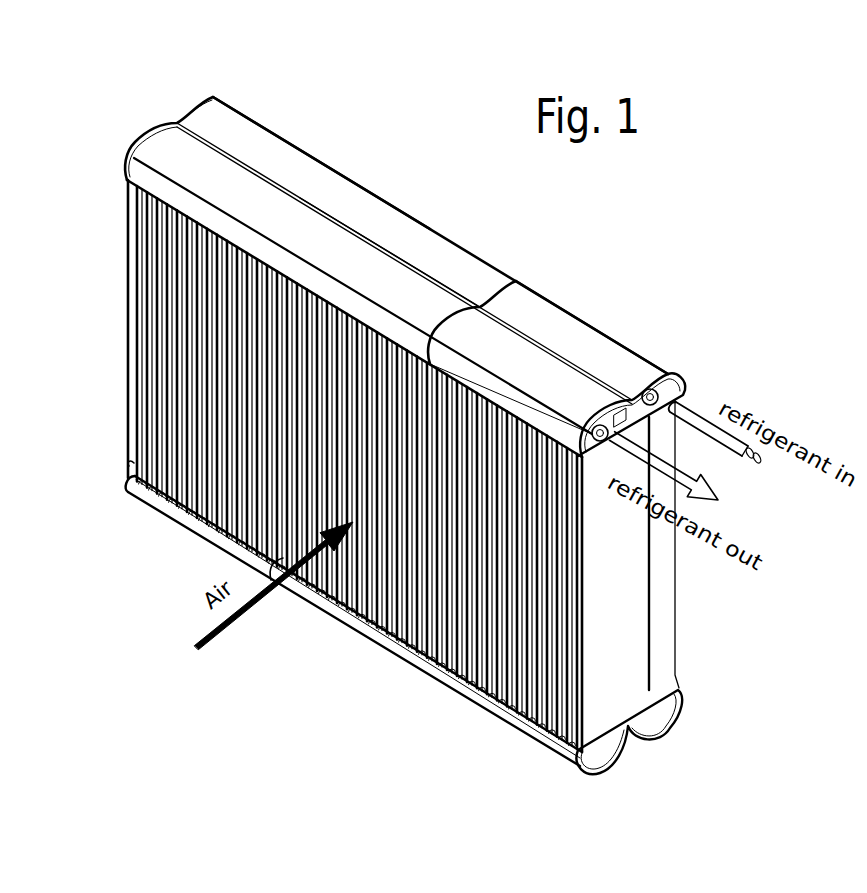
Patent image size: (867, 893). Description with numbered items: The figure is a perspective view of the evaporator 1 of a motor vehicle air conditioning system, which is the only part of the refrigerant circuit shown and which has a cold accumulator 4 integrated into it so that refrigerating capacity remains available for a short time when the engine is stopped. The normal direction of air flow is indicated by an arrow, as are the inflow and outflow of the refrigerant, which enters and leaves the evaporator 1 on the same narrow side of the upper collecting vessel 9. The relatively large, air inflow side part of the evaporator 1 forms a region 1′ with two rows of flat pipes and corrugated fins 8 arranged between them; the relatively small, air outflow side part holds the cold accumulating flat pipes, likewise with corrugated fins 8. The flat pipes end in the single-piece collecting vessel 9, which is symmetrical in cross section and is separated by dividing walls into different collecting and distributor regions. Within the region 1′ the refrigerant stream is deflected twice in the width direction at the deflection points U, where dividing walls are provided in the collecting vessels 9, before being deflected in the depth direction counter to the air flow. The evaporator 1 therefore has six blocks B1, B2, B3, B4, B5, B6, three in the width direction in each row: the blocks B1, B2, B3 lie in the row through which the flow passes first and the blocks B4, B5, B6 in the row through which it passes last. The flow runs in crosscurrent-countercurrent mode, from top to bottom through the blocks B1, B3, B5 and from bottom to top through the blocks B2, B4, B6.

The evaporator 1 is at (147, 596).
The region with two rows of flat pipes 1′ is at (390, 528).
The cold accumulator 4 is at (665, 592).
The corrugated fins 8 is at (160, 403).
The collecting vessel 9 is at (180, 147).
The block B1 is at (618, 348).
The block B2 is at (442, 255).
The block B3 is at (312, 170).
The block B4 is at (188, 332).
The block B5 is at (335, 455).
The block B6 is at (492, 612).
The deflection points U is at (517, 280).